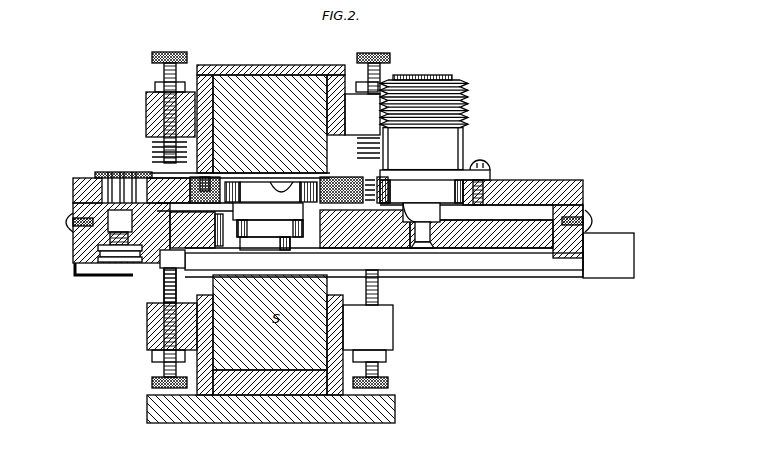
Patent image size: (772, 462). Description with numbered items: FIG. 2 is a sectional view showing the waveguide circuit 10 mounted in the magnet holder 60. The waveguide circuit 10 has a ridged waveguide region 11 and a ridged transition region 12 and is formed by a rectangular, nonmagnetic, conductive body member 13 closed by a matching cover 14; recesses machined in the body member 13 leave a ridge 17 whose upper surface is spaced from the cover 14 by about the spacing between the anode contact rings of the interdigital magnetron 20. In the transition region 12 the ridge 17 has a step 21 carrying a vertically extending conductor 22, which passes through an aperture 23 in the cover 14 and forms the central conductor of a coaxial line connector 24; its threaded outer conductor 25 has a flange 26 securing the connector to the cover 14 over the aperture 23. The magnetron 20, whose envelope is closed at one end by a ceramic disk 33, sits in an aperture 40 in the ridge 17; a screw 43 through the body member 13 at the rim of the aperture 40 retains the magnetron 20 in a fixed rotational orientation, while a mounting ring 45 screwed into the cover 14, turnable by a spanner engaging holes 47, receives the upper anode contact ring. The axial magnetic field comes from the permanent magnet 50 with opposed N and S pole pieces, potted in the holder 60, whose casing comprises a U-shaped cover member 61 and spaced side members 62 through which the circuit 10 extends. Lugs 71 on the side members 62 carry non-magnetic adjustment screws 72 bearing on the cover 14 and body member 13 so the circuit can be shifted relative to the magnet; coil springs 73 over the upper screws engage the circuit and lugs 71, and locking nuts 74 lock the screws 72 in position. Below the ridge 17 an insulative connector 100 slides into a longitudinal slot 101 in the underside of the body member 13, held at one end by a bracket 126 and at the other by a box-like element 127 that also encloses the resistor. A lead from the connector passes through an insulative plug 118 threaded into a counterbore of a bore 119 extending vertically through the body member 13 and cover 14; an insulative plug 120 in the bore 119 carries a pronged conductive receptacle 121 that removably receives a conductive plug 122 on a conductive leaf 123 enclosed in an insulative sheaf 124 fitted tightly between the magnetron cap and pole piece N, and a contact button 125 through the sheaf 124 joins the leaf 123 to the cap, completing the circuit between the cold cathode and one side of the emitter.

The waveguide circuit 10 is at (350, 160).
The ridged waveguide region 11 is at (186, 236).
The ridged transition region 12 is at (395, 240).
The body member 13 is at (537, 240).
The cover 14 is at (583, 193).
The ridge 17 is at (365, 229).
The interdigital magnetron 20 is at (265, 210).
The step 21 is at (418, 205).
The conductor 22 is at (440, 225).
The aperture 23 is at (457, 208).
The coaxial line connector 24 is at (428, 75).
The threaded outer conductor 25 is at (468, 104).
The flange 26 is at (489, 172).
The ceramic disk 33 is at (283, 250).
The aperture 40 is at (300, 241).
The screw 43 is at (225, 225).
The mounting ring 45 is at (204, 180).
The holes 47 is at (216, 183).
The magnet 50 is at (280, 111).
The holder 60 is at (228, 63).
The U-shaped cover member 61 is at (266, 65).
The side members 62 is at (200, 88).
The lugs 71 is at (146, 112).
The adjustment screws 72 is at (163, 70).
The coil springs 73 is at (157, 158).
The locking nut 74 is at (155, 87).
The connector 100 is at (492, 278).
The slot 101 is at (465, 250).
The insulative plug 118 is at (128, 258).
The bore 119 is at (117, 231).
The insulative plug 120 is at (98, 199).
The pronged conductive receptacle 121 is at (75, 186).
The conductive plug 122 is at (106, 178).
The conductive leaf 123 is at (96, 174).
The insulative sheaf 124 is at (113, 178).
The contact button 125 is at (292, 182).
The bracket 126 is at (96, 278).
The box-like element 127 is at (626, 254).